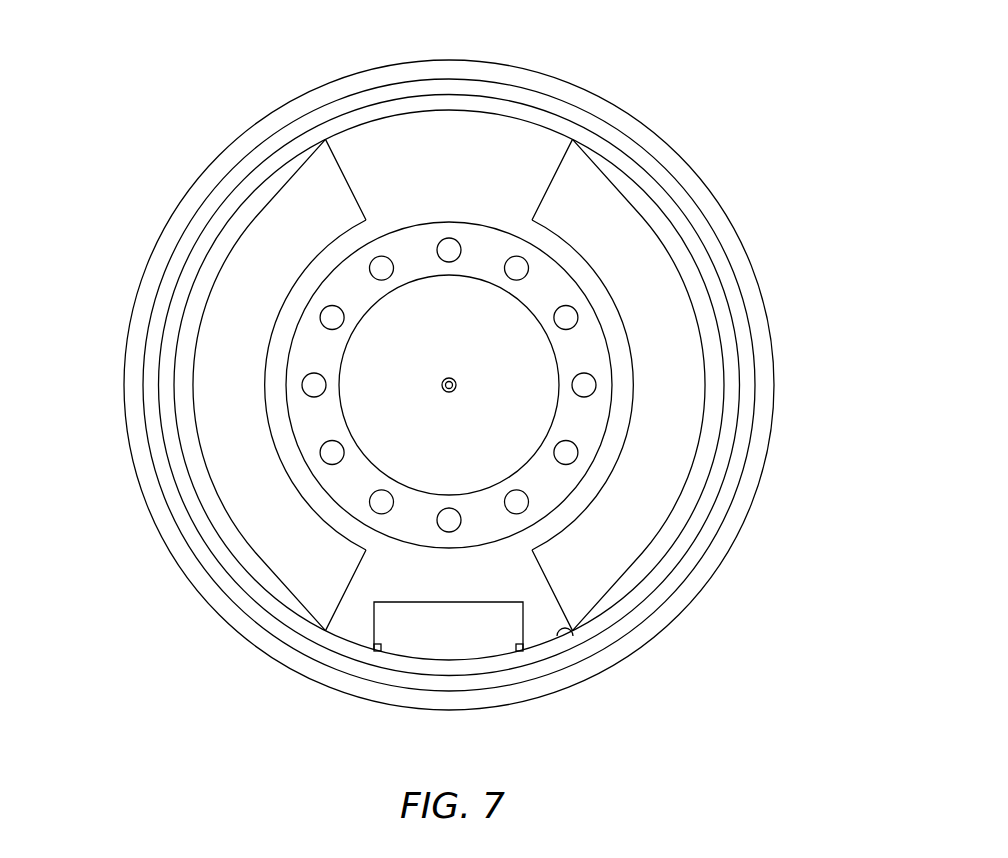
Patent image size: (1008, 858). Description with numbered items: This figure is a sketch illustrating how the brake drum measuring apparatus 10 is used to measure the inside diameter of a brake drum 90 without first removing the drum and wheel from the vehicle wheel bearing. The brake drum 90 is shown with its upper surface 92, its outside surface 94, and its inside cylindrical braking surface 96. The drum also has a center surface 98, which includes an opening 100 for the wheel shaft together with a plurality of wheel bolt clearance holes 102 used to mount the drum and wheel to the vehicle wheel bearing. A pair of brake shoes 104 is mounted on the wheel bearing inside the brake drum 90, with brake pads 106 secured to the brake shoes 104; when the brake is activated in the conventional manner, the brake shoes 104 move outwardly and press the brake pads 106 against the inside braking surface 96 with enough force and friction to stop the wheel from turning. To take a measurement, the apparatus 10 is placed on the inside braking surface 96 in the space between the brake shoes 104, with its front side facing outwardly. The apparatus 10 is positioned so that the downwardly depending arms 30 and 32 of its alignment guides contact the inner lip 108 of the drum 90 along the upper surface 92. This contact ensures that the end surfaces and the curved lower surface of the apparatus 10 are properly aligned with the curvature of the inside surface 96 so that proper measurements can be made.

The brake drum measuring apparatus 10 is at (478, 633).
The downwardly depending arm 30 is at (375, 657).
The downwardly depending arm 32 is at (378, 692).
The brake drum 90 is at (641, 122).
The upper surface 92 is at (740, 253).
The outside surface 94 is at (131, 462).
The inside cylindrical braking surface 96 is at (282, 149).
The center surface 98 is at (477, 247).
The opening 100 is at (469, 314).
The wheel bolt clearance holes 102 is at (580, 452).
The brake shoes 104 is at (302, 263).
The brake pads 106 is at (207, 302).
The inner lip 108 is at (573, 636).